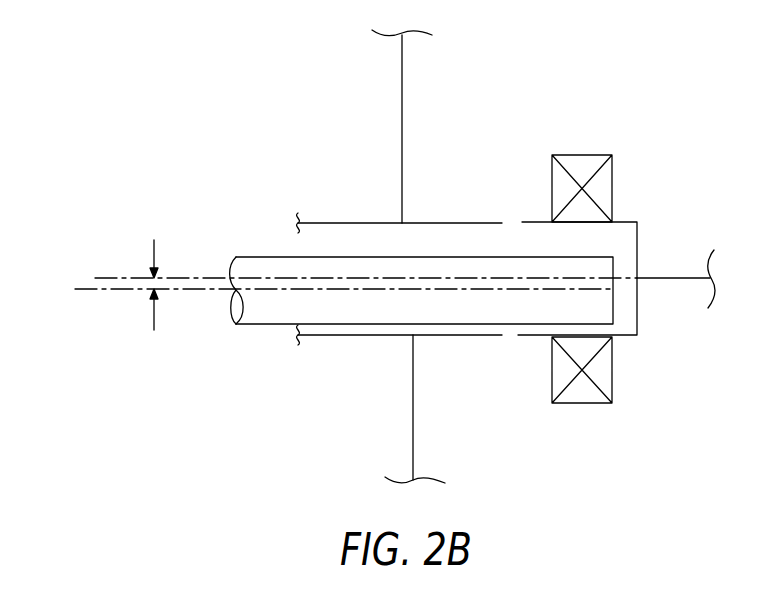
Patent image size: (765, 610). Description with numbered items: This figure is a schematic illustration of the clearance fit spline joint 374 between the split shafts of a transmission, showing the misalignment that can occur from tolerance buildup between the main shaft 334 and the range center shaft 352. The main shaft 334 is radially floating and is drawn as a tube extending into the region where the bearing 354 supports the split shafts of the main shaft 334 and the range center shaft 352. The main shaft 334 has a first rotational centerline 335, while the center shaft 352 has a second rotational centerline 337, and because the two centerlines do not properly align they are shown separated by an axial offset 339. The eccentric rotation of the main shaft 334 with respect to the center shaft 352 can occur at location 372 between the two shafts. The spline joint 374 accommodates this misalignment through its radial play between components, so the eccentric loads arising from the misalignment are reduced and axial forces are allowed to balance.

The main shaft 334 is at (257, 314).
The first rotational centerline 335 is at (98, 292).
The second rotational centerline 337 is at (110, 277).
The axial offset 339 is at (152, 252).
The range center shaft 352 is at (668, 277).
The bearing 354 is at (580, 155).
The location 372 is at (497, 373).
The clearance fit spline joint 374 is at (226, 243).